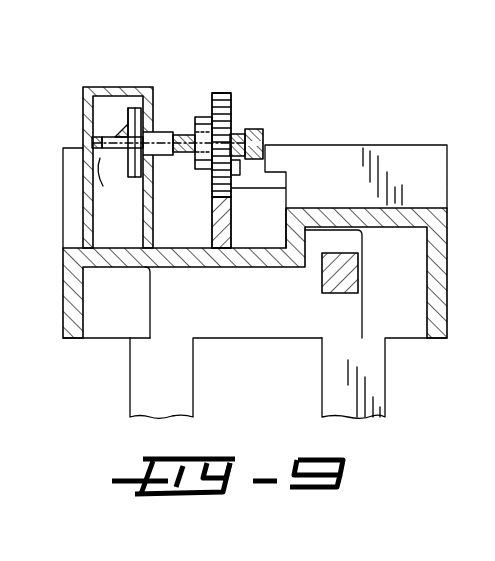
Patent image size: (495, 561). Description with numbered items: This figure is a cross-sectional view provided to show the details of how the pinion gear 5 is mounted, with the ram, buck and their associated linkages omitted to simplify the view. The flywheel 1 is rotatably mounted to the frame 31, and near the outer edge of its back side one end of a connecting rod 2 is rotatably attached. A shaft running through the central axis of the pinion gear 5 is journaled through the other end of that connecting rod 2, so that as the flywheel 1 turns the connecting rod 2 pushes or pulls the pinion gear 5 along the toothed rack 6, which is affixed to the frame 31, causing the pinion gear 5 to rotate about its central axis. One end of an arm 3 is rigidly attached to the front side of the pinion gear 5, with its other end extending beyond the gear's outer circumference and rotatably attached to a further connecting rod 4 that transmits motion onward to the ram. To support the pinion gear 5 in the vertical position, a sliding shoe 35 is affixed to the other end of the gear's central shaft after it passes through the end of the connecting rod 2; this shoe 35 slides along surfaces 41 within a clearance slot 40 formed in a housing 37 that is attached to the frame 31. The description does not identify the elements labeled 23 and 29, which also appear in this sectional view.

The flywheel 1 is at (224, 283).
The connecting rod 2 is at (183, 132).
The arm 3 is at (237, 133).
The connecting rod 4 is at (258, 129).
The pinion gear 5 is at (216, 93).
The toothed rack 6 is at (233, 197).
The stop block 23 is at (323, 273).
The recess 29 is at (288, 174).
The frame 31 is at (447, 318).
The sliding shoe 35 is at (120, 130).
The housing 37 is at (102, 88).
The clearance slot 40 is at (91, 141).
The surfaces 41 is at (129, 177).